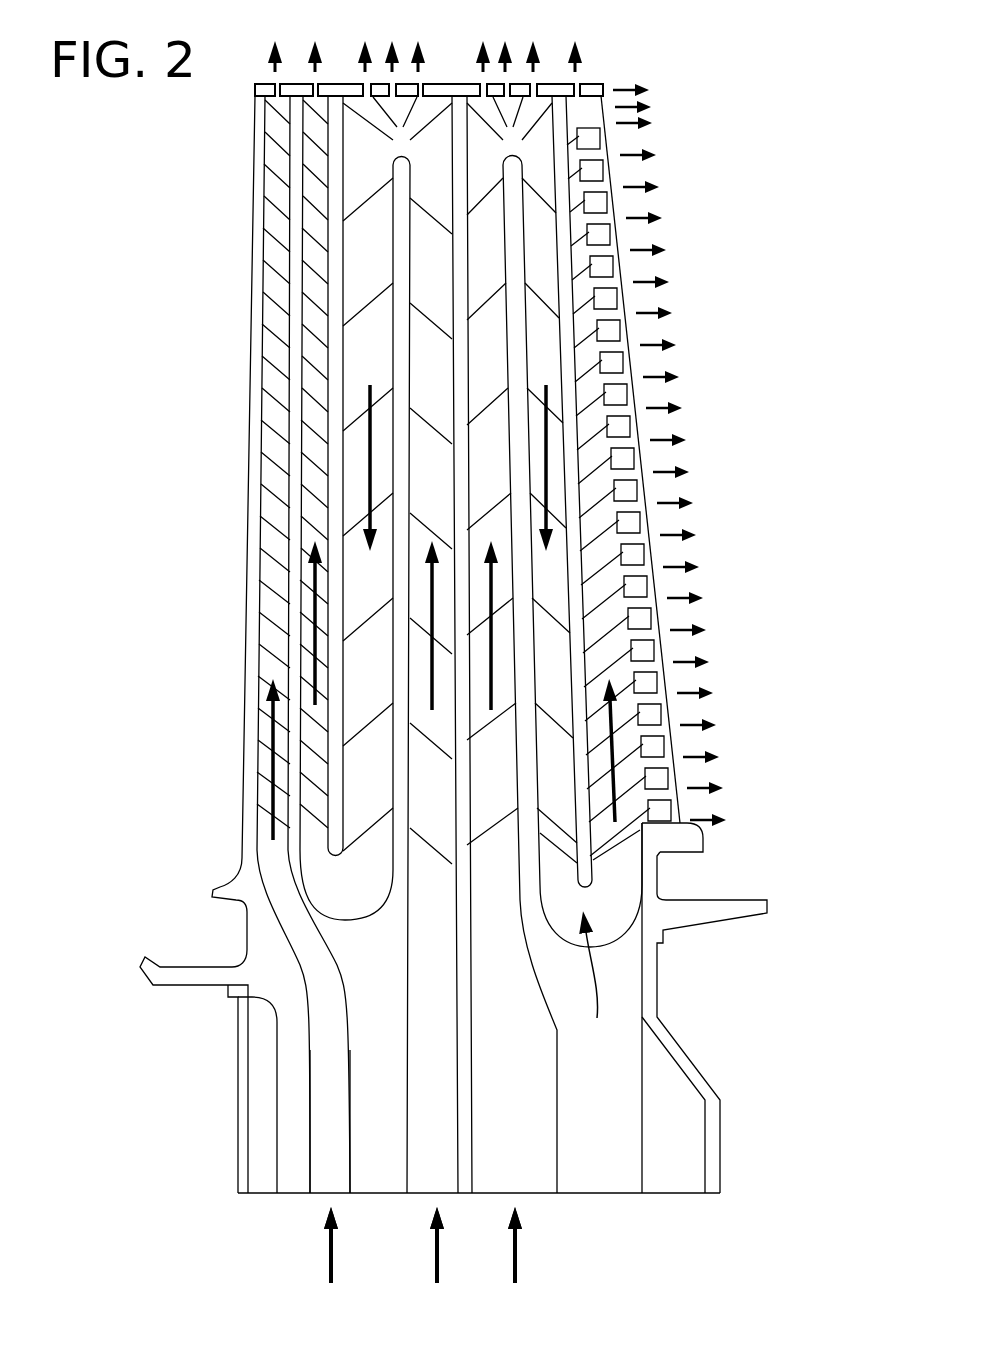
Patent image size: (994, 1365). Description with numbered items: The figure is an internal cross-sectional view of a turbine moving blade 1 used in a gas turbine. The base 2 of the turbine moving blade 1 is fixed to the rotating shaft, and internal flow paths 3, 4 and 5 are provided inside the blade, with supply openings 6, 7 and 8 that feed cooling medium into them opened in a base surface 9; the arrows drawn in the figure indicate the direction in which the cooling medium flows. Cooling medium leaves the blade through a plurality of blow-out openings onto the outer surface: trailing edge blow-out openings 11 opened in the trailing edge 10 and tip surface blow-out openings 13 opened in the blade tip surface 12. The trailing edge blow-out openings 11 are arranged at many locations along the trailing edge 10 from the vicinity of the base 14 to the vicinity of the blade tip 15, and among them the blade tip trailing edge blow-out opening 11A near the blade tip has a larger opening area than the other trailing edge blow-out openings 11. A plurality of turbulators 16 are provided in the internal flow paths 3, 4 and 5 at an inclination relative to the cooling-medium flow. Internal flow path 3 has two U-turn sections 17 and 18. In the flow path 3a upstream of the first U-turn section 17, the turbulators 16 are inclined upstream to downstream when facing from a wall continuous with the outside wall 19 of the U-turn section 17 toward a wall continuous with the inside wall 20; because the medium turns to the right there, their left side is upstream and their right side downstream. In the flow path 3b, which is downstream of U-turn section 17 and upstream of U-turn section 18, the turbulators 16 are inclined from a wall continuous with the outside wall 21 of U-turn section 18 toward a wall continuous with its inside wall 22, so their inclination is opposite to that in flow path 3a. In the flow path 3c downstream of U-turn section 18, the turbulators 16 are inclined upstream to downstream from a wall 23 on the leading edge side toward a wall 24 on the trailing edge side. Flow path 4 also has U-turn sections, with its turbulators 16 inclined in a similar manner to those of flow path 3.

The turbine moving blade 1 is at (183, 228).
The base 2 is at (628, 1073).
The internal flow path 3 is at (530, 1153).
The flow path 3a is at (487, 580).
The flow path 3b is at (554, 755).
The flow path 3c is at (593, 377).
The internal flow path 4 is at (423, 1140).
The internal flow path 5 is at (328, 1047).
The supply opening 6 is at (533, 1194).
The supply opening 7 is at (440, 1194).
The supply opening 8 is at (338, 1194).
The base surface 9 is at (612, 1194).
The trailing edge 10 is at (636, 357).
The trailing edge blow-out openings 11 is at (622, 345).
The blade tip trailing edge blow-out opening 11A is at (597, 113).
The blade tip surface 12 is at (465, 84).
The tip surface blow-out openings 13 is at (422, 84).
The base 14 is at (690, 824).
The blade tip 15 is at (606, 93).
The turbulators 16 is at (435, 254).
The first U-turn section 17 is at (538, 106).
The U-turn section 18 is at (595, 997).
The outside wall 19 is at (397, 648).
The inside wall 20 is at (493, 200).
The outside wall 21 is at (540, 835).
The inside wall 22 is at (590, 858).
The wall 23 is at (592, 705).
The wall 24 is at (633, 660).